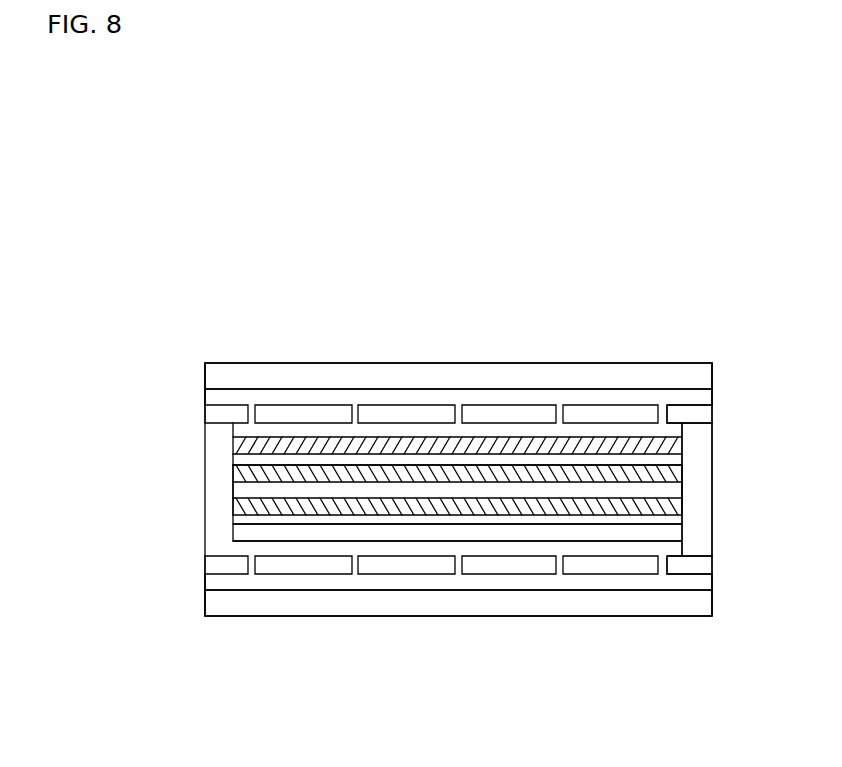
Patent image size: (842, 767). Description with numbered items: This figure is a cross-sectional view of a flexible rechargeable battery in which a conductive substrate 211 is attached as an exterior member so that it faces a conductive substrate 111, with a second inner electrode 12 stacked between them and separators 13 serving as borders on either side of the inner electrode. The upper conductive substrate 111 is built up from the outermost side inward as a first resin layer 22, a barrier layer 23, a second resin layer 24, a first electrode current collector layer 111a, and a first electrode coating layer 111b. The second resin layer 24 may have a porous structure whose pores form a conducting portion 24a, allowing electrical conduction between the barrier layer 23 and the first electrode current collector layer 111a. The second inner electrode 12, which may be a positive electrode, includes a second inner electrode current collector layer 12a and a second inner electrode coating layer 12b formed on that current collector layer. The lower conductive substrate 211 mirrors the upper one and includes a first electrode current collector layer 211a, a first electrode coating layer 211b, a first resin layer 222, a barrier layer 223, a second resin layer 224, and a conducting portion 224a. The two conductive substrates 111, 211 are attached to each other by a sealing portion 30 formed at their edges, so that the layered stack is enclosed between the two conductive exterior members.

The conductive substrate 111 is at (92, 325).
The first resin layer 22 is at (218, 377).
The barrier layer 23 is at (215, 398).
The second resin layer 24 is at (215, 413).
The conducting portion 24a is at (665, 412).
The first electrode current collector layer 111a is at (240, 433).
The first electrode coating layer 111b is at (238, 454).
The separator 13 is at (672, 460).
The second inner electrode 12 is at (607, 683).
The second inner electrode current collector layer 12a is at (520, 478).
The second inner electrode coating layer 12b is at (587, 492).
The sealing portion 30 is at (702, 438).
The conductive substrate 211 is at (80, 520).
The first electrode coating layer 211b is at (238, 531).
The first electrode current collector layer 211a is at (238, 548).
The second resin layer 224 is at (212, 563).
The conducting portion 224a is at (672, 563).
The barrier layer 223 is at (212, 582).
The first resin layer 222 is at (212, 608).